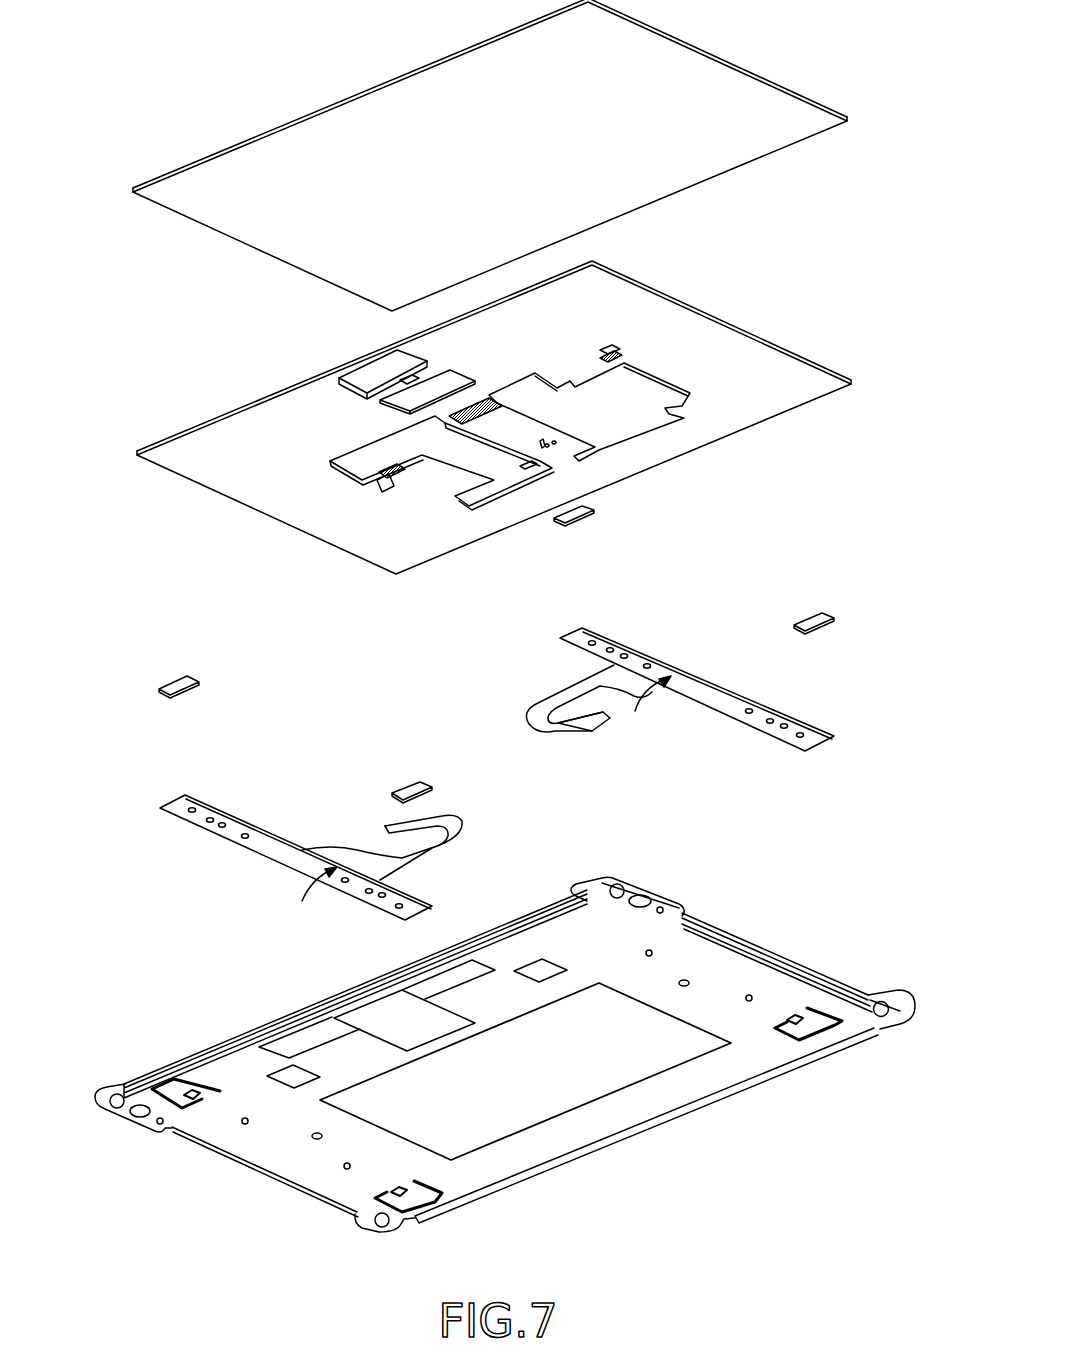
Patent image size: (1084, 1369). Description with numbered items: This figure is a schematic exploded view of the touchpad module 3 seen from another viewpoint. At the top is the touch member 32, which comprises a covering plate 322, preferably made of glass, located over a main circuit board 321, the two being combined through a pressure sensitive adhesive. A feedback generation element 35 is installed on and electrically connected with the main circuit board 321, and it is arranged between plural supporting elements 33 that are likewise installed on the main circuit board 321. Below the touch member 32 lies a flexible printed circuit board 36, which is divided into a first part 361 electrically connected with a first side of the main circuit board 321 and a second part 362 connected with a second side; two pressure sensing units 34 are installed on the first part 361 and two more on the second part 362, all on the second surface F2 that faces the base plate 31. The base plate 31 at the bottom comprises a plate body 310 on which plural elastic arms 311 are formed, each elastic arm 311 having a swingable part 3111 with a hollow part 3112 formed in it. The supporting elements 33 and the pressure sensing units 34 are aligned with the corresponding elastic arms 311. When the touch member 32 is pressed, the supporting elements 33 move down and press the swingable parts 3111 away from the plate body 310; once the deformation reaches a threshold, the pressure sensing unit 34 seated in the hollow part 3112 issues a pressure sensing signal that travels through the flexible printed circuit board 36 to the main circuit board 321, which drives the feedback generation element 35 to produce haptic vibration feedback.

The touchpad module 3 is at (295, 51).
The touch member 32 is at (860, 185).
The main circuit board 321 is at (788, 395).
The covering plate 322 is at (795, 134).
The feedback generation element 35 is at (363, 384).
The supporting elements 33 is at (582, 522).
The flexible printed circuit board 36 is at (172, 537).
The first part 361 is at (717, 700).
The second part 362 is at (243, 888).
The pressure sensing units 34 is at (590, 644).
The second surface F2 is at (479, 806).
The base plate 31 is at (172, 965).
The plate body 310 is at (763, 940).
The elastic arms 311 is at (885, 1103).
The swingable part 3111 is at (837, 1036).
The hollow part 3112 is at (793, 1031).